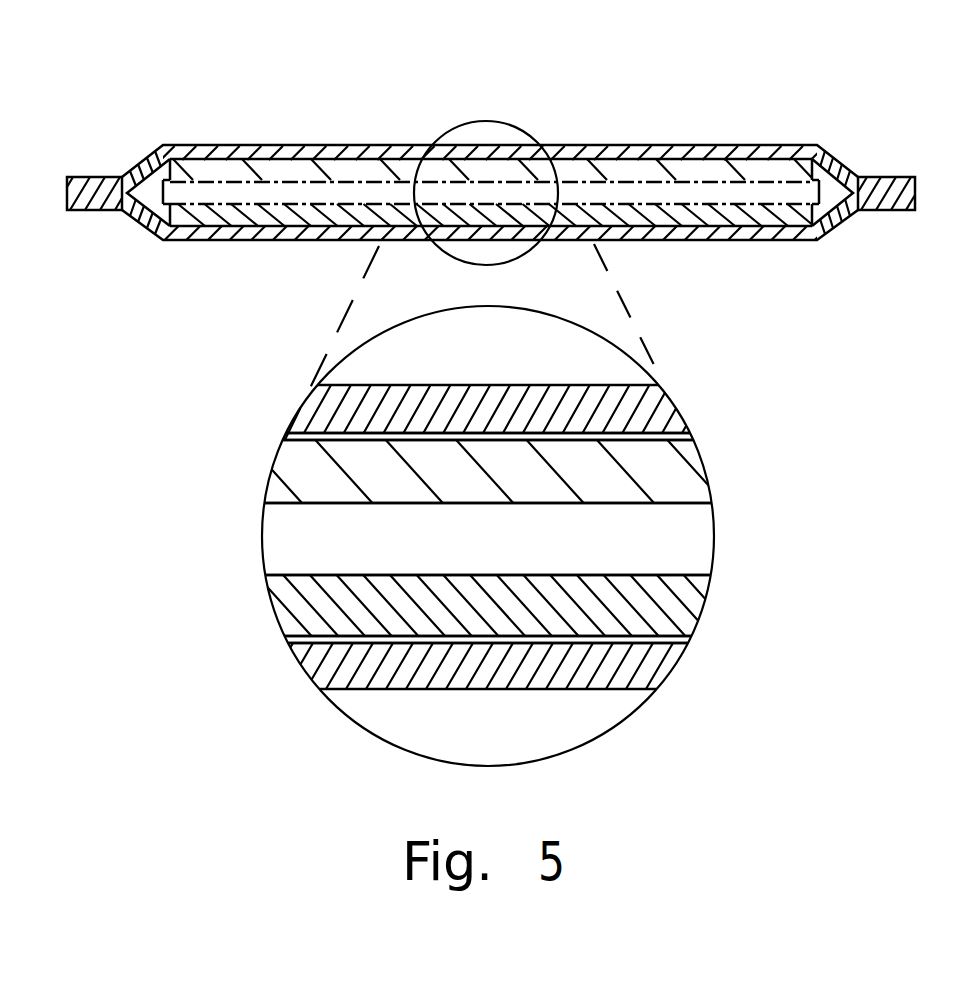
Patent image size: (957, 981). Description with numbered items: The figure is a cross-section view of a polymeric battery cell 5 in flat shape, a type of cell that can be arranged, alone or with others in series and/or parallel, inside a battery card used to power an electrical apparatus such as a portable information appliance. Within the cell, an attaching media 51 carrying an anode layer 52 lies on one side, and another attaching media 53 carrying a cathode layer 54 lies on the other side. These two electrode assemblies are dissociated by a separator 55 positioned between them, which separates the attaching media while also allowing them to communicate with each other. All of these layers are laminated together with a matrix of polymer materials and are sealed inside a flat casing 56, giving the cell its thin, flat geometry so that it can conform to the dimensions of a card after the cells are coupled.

The polymeric battery cell 5 is at (596, 114).
The attaching media 51 is at (290, 638).
The anode layer 52 is at (350, 610).
The attaching media 53 is at (313, 438).
The cathode layer 54 is at (355, 474).
The separator 55 is at (630, 550).
The flat casing 56 is at (660, 413).